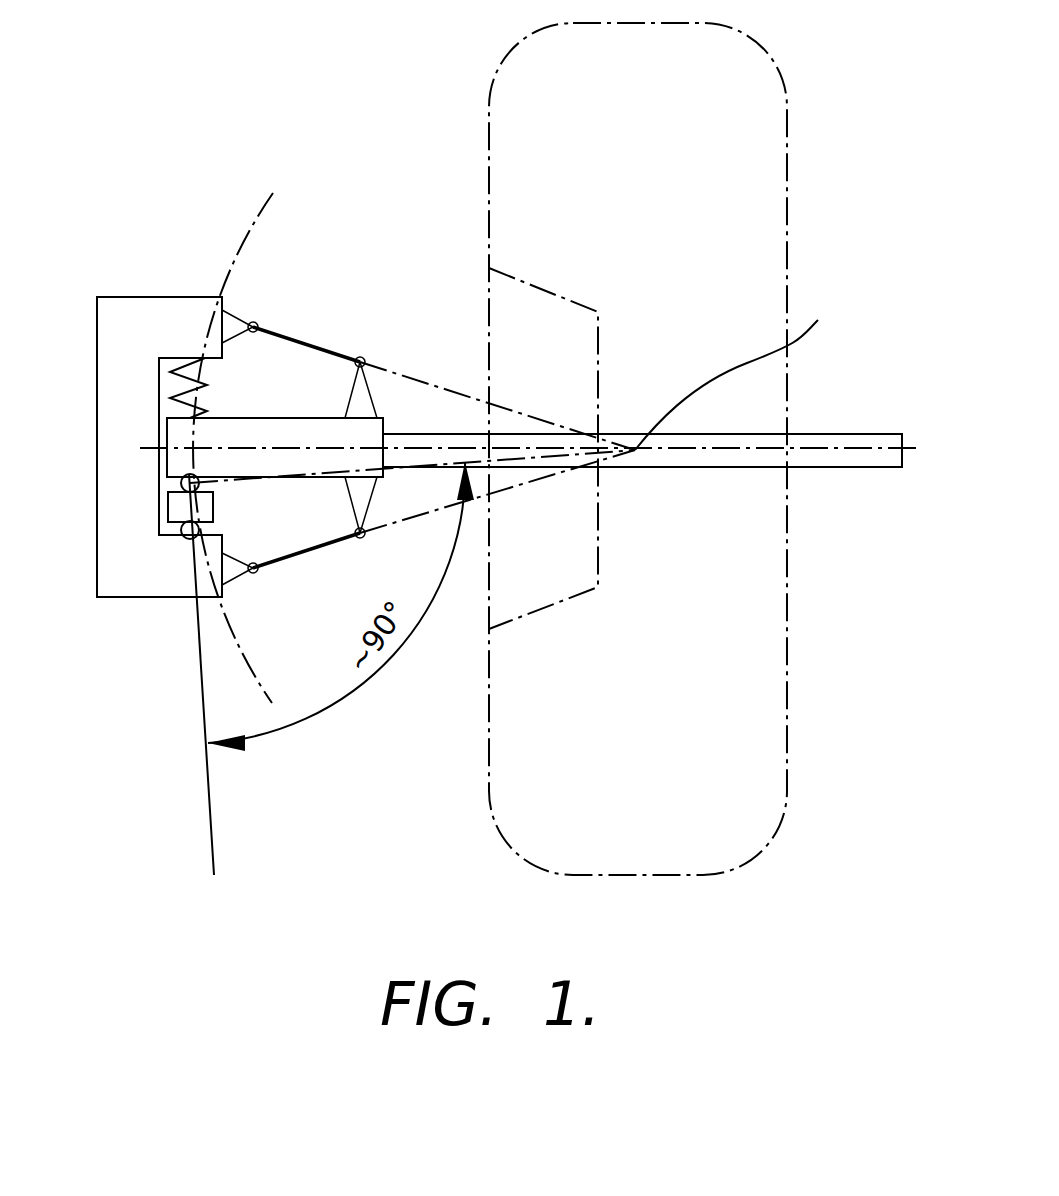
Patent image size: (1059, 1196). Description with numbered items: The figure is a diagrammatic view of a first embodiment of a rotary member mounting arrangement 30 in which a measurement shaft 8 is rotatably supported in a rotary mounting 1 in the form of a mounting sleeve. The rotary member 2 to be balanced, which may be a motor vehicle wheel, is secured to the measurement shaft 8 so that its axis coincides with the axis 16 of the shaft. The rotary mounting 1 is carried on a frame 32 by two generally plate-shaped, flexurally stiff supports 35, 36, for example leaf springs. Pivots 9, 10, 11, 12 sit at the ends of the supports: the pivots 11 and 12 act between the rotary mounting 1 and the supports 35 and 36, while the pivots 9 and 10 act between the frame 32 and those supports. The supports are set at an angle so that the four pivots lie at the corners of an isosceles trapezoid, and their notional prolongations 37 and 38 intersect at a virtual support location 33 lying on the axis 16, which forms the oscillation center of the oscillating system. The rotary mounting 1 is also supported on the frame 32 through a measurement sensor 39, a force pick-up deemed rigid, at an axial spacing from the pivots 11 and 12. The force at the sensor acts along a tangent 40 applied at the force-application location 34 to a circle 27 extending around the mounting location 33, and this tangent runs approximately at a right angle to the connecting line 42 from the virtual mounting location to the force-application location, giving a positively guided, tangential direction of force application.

The rotary mounting 1 is at (282, 430).
The rotary member 2 is at (750, 63).
The measurement shaft 8 is at (833, 440).
The pivot 9 is at (249, 340).
The pivot 10 is at (250, 577).
The pivot 11 is at (367, 357).
The pivot 12 is at (379, 512).
The axis of the measurement shaft 16 is at (747, 452).
The circle 27 is at (241, 246).
The rotary member mounting arrangement 30 is at (366, 218).
The frame 32 is at (166, 296).
The virtual support location 33 is at (737, 369).
The force-application location 34 is at (188, 476).
The support 35 is at (302, 337).
The support 36 is at (303, 556).
The notional prolongation 37 is at (518, 412).
The notional prolongation 38 is at (418, 516).
The measurement sensor 39 is at (180, 505).
The tangent 40 is at (198, 667).
The connecting line 42 is at (263, 473).